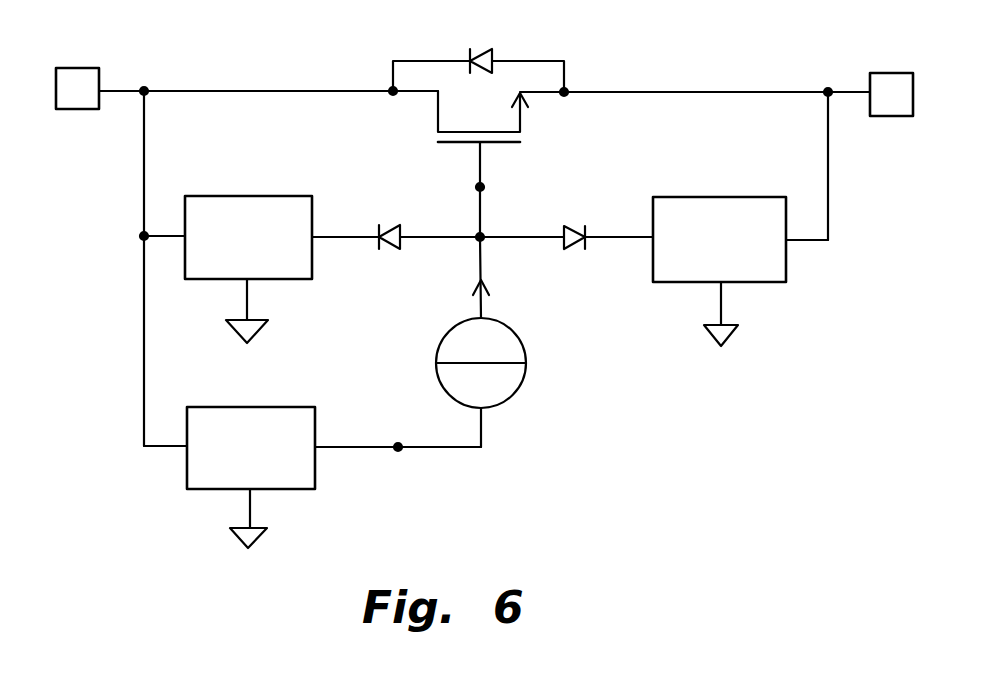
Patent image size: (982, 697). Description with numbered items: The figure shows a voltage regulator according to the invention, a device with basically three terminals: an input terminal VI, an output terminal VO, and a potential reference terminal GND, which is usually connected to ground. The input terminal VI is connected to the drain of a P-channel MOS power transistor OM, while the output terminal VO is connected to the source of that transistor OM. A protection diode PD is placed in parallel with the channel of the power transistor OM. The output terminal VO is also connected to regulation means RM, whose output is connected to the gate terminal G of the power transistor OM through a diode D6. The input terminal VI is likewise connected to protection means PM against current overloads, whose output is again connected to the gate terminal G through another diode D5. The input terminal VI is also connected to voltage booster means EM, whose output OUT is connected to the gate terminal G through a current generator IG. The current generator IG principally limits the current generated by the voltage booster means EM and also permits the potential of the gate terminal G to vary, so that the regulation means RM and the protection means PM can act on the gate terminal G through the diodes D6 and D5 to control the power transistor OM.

The input terminal VI is at (77, 73).
The output terminal VO is at (891, 81).
The protection diode PD is at (478, 52).
The P-channel MOS power transistor OM is at (506, 117).
The gate terminal G is at (492, 191).
The protection means PM is at (267, 212).
The regulation means RM is at (752, 218).
The diode D5 is at (396, 221).
The diode D6 is at (566, 221).
The voltage booster means EM is at (269, 422).
The output OUT is at (398, 432).
The current generator IG is at (485, 342).
The potential reference terminal GND is at (270, 526).